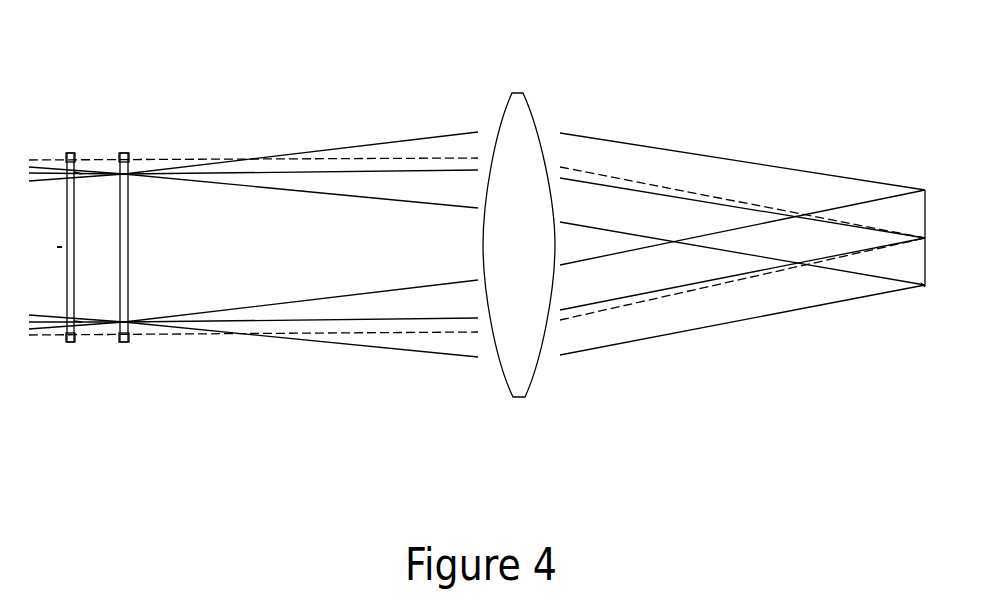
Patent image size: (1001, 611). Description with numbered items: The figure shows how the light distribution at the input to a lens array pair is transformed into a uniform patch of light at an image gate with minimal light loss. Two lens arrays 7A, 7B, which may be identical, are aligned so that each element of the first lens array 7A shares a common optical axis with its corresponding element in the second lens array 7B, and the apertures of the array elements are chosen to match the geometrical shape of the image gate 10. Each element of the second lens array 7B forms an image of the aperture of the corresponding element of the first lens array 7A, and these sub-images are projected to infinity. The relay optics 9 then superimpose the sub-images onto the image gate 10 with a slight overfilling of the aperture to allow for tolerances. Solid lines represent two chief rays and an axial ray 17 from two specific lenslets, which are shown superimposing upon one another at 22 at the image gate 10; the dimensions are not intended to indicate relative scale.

The axial ray 17 is at (82, 322).
The first lens array 7A is at (70, 343).
The second lens array 7B is at (124, 343).
The relay optics 9 is at (518, 387).
The superposition point 22 is at (925, 237).
The image gate 10 is at (924, 287).